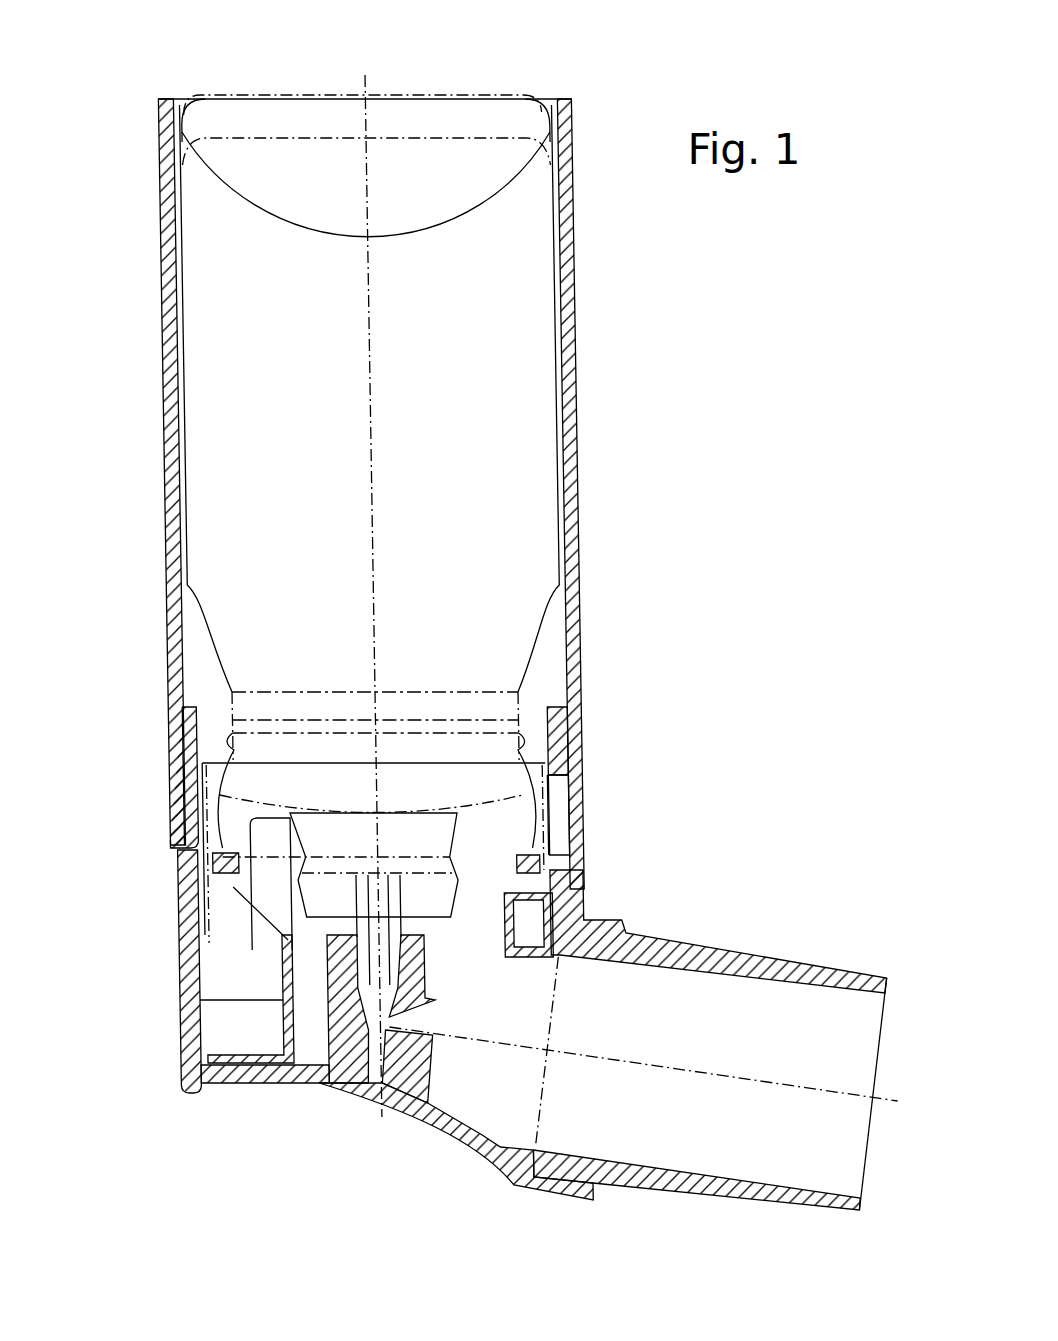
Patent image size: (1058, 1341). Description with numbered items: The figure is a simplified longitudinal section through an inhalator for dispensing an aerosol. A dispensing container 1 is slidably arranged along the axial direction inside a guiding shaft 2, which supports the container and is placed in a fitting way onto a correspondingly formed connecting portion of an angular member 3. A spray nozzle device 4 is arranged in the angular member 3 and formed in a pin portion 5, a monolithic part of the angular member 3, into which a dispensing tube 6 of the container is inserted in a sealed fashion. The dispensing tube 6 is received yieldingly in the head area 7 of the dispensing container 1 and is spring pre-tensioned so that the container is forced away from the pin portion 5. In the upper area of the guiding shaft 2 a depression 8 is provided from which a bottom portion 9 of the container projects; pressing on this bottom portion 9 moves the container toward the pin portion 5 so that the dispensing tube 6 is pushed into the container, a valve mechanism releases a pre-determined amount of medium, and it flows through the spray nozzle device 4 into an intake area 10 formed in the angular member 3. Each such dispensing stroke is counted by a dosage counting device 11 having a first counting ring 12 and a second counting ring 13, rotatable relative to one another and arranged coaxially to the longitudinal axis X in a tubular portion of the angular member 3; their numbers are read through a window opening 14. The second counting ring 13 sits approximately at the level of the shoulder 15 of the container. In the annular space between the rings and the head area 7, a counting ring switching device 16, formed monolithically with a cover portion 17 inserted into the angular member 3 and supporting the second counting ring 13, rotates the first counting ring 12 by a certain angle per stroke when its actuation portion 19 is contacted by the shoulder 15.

The dispensing container 1 is at (523, 472).
The guiding shaft 2 is at (567, 383).
The angular member 3 is at (680, 947).
The spray nozzle device 4 is at (410, 1028).
The pin portion 5 is at (343, 1053).
The dispensing tube 6 is at (388, 925).
The head area 7 is at (375, 853).
The depression 8 is at (437, 227).
The bottom portion 9 is at (473, 93).
The intake area 10 is at (710, 1083).
The dosage counting device 11 is at (618, 817).
The first counting ring 12 is at (547, 853).
The second counting ring 13 is at (565, 797).
The window opening 14 is at (557, 818).
The shoulder 15 is at (210, 752).
The counting ring switching device 16 is at (267, 887).
The cover portion 17 is at (283, 972).
The actuation portion 19 is at (240, 856).
The longitudinal axis X is at (370, 438).